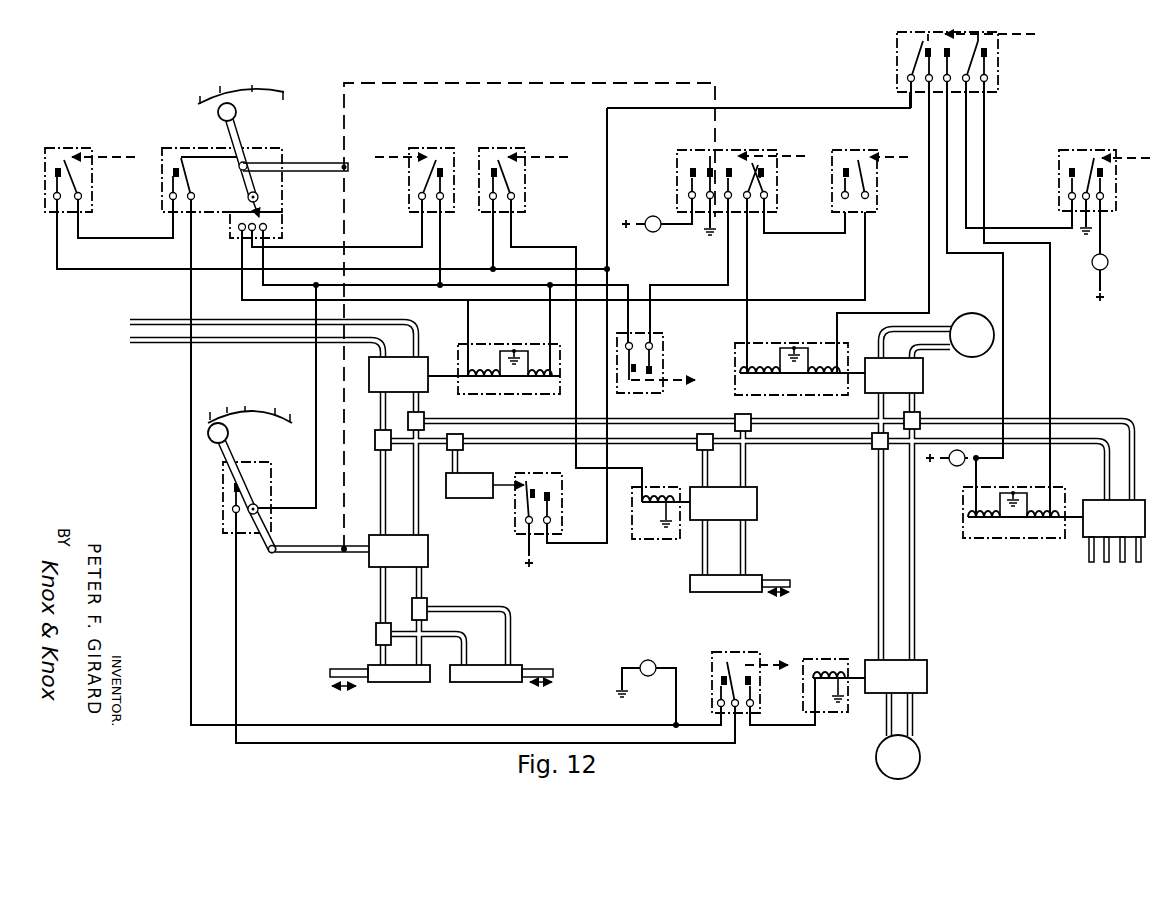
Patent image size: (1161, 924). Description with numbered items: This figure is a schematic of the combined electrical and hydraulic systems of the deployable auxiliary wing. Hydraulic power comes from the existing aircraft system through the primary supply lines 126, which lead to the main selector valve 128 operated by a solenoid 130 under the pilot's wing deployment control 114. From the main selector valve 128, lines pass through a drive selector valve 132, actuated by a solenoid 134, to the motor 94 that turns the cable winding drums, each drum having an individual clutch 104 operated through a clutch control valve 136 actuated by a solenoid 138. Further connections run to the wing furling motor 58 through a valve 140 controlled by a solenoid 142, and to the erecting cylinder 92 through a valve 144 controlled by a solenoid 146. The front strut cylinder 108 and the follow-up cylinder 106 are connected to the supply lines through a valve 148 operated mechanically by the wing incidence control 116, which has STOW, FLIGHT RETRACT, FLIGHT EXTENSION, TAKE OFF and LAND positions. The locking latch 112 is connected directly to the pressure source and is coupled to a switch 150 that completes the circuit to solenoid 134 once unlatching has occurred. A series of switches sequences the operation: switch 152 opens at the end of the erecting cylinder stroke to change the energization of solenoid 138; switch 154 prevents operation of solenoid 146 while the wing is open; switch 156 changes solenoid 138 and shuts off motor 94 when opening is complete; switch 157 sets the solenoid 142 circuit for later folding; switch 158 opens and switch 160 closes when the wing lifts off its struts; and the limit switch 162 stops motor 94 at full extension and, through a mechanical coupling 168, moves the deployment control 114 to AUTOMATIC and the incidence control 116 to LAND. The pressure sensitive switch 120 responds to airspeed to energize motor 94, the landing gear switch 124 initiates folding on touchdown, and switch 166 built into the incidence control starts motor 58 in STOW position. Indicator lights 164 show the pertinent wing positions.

The wing furling motor 58 is at (918, 746).
The erecting cylinder 92 is at (724, 594).
The motor 94 is at (969, 313).
The clutch 104 is at (1103, 603).
The follow-up cylinder 106 is at (511, 683).
The front strut cylinder 108 is at (403, 683).
The locking latch 112 is at (470, 494).
The wing deployment control 114 is at (272, 148).
The wing incidence control 116 is at (222, 510).
The pressure sensitive switch 120 is at (873, 213).
The switch 124 is at (445, 148).
The primary supply lines 126 is at (177, 343).
The main selector valve 128 is at (420, 358).
The solenoid 130 is at (525, 344).
The drive selector valve 132 is at (923, 377).
The solenoid 134 is at (770, 343).
The clutch control valve 136 is at (1085, 532).
The solenoid 138 is at (995, 540).
The valve 140 is at (927, 672).
The solenoid 142 is at (838, 659).
The valve 144 is at (752, 507).
The solenoid 146 is at (640, 540).
The valve 148 is at (371, 561).
The switch 150 is at (516, 526).
The switch 152 is at (1068, 150).
The switch 154 is at (520, 148).
The switch 156 is at (999, 79).
The switch 157 is at (749, 652).
The switch 158 is at (78, 148).
The switch 160 is at (665, 344).
The limit switch 162 is at (763, 150).
The indicator lights 164 is at (656, 233).
The switch 166 is at (240, 486).
The mechanical coupling 168 is at (518, 83).